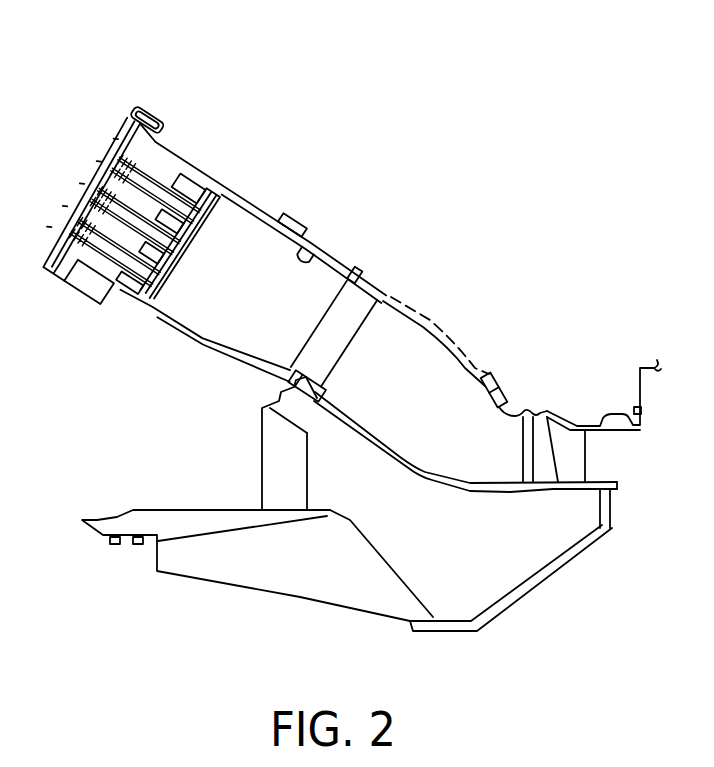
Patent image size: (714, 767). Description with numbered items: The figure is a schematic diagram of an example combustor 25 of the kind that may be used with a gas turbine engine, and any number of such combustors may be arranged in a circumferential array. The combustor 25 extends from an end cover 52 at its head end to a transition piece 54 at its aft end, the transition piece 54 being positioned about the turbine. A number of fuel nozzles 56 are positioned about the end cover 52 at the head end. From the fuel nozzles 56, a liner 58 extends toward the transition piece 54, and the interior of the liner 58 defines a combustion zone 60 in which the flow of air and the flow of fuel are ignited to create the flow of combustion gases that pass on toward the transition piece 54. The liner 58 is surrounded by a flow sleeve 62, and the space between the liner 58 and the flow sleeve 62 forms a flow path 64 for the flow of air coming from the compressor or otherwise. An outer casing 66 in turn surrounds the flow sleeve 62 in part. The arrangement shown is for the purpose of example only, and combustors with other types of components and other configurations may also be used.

The combustor 25 is at (262, 106).
The end cover 52 is at (61, 233).
The transition piece 54 is at (443, 452).
The fuel nozzles 56 is at (140, 257).
The liner 58 is at (314, 260).
The combustion zone 60 is at (266, 293).
The flow sleeve 62 is at (417, 313).
The flow path 64 is at (478, 376).
The outer casing 66 is at (297, 217).